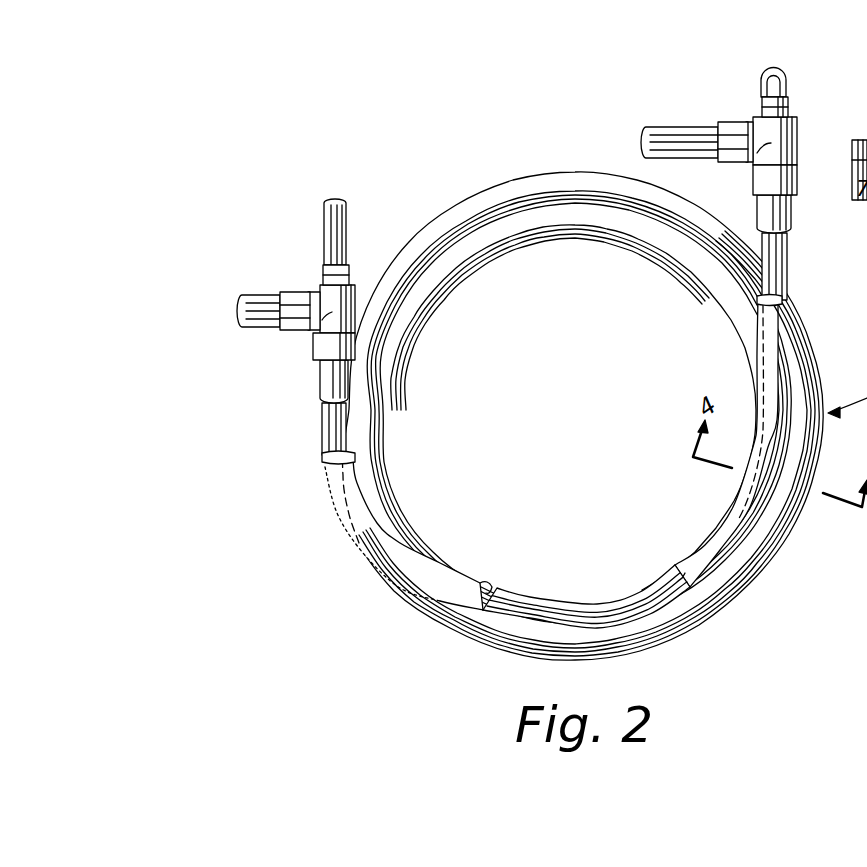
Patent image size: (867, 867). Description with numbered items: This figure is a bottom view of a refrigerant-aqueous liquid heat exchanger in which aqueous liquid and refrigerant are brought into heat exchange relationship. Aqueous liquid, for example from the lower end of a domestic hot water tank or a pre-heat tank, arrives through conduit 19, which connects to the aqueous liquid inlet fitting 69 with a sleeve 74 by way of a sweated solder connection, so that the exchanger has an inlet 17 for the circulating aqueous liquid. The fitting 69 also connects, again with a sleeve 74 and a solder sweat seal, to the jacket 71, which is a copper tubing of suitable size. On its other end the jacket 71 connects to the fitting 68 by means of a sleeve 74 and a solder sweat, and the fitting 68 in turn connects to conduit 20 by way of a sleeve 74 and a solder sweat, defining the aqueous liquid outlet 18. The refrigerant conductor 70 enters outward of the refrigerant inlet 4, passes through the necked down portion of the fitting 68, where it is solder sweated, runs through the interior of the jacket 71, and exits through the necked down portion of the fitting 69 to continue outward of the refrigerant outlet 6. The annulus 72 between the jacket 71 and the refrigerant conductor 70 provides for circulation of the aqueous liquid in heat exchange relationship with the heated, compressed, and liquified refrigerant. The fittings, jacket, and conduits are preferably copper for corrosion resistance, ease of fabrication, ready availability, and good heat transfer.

The inlet 4 is at (790, 107).
The outlet 6 is at (333, 310).
The inlet 17 is at (313, 295).
The outlet 18 is at (752, 125).
The conduit 19 is at (265, 312).
The conduit 20 is at (666, 135).
The fitting 68 is at (781, 151).
The aqueous liquid inlet fitting 69 is at (357, 350).
The refrigerant conductor 70 is at (550, 355).
The jacket 71 is at (358, 516).
The annulus 72 is at (350, 455).
The sleeve 74 is at (294, 300).